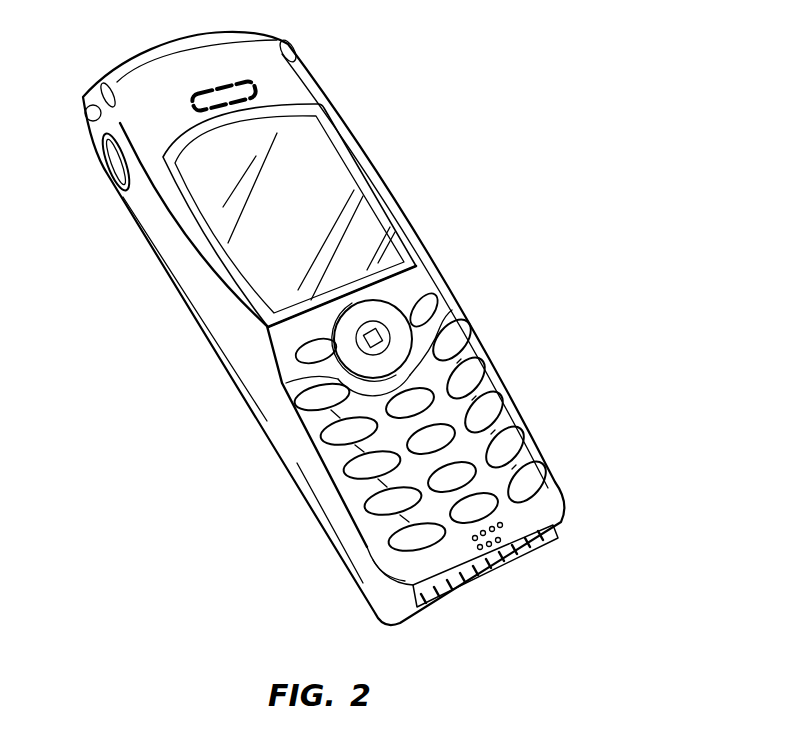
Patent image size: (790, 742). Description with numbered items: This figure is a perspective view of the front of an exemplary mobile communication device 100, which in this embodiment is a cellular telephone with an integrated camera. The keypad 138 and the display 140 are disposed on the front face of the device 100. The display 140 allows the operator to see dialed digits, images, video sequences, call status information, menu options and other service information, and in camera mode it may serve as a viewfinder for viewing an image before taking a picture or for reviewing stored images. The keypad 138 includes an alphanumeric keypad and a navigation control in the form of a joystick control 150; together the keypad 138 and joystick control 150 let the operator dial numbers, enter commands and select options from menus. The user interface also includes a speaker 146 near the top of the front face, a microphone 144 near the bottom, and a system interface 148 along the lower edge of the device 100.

The mobile communication device 100 is at (535, 102).
The keypad 138 is at (514, 360).
The display 140 is at (245, 259).
The microphone 144 is at (507, 531).
The speaker 146 is at (225, 88).
The system interface 148 is at (477, 587).
The joystick control 150 is at (403, 338).